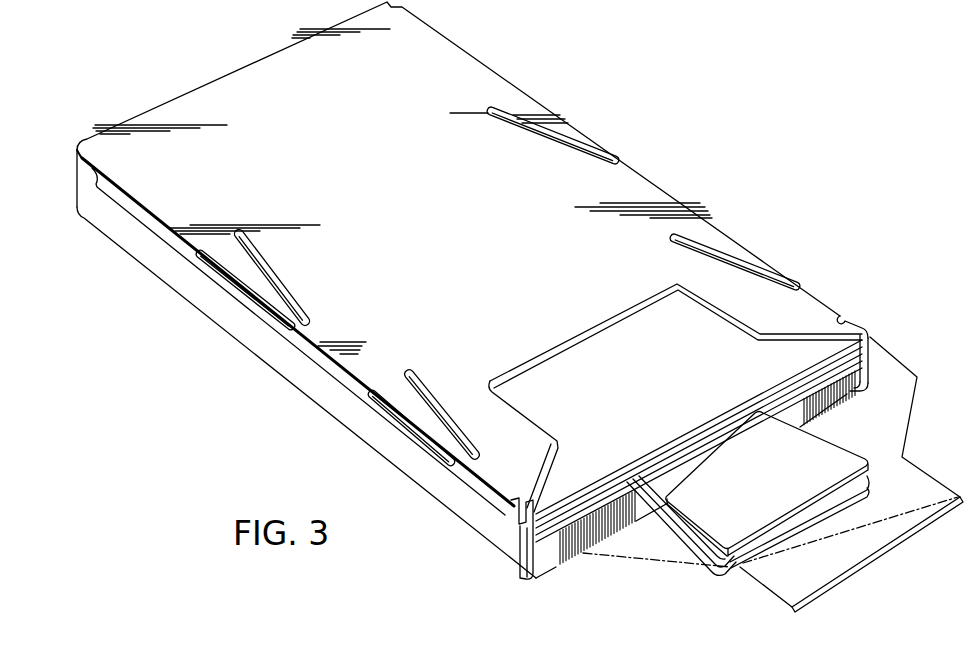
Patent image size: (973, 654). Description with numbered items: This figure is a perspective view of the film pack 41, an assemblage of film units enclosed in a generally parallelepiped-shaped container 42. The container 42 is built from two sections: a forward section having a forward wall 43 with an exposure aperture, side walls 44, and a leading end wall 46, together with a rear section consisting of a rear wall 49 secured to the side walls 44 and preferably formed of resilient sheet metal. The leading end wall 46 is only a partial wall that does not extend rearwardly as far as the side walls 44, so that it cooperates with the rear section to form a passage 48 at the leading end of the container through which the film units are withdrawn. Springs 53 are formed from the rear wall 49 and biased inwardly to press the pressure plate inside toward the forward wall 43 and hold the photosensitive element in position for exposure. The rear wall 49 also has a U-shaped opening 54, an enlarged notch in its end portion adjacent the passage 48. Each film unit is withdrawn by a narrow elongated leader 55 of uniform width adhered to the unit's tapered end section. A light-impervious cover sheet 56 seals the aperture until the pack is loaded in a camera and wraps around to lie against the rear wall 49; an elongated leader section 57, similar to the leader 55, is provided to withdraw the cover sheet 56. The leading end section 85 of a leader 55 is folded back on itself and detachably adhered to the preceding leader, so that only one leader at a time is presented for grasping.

The film pack 41 is at (655, 166).
The container 42 is at (864, 318).
The forward wall 43 is at (866, 329).
The side walls 44 is at (244, 326).
The leading end wall 46 is at (543, 573).
The passage 48 is at (853, 390).
The rear wall 49 is at (408, 225).
The springs 53 is at (585, 148).
The U-shaped opening 54 is at (682, 297).
The leader 55 is at (665, 512).
The cover sheet 56 is at (878, 438).
The leader section 57 is at (912, 505).
The leading end section 85 is at (765, 490).